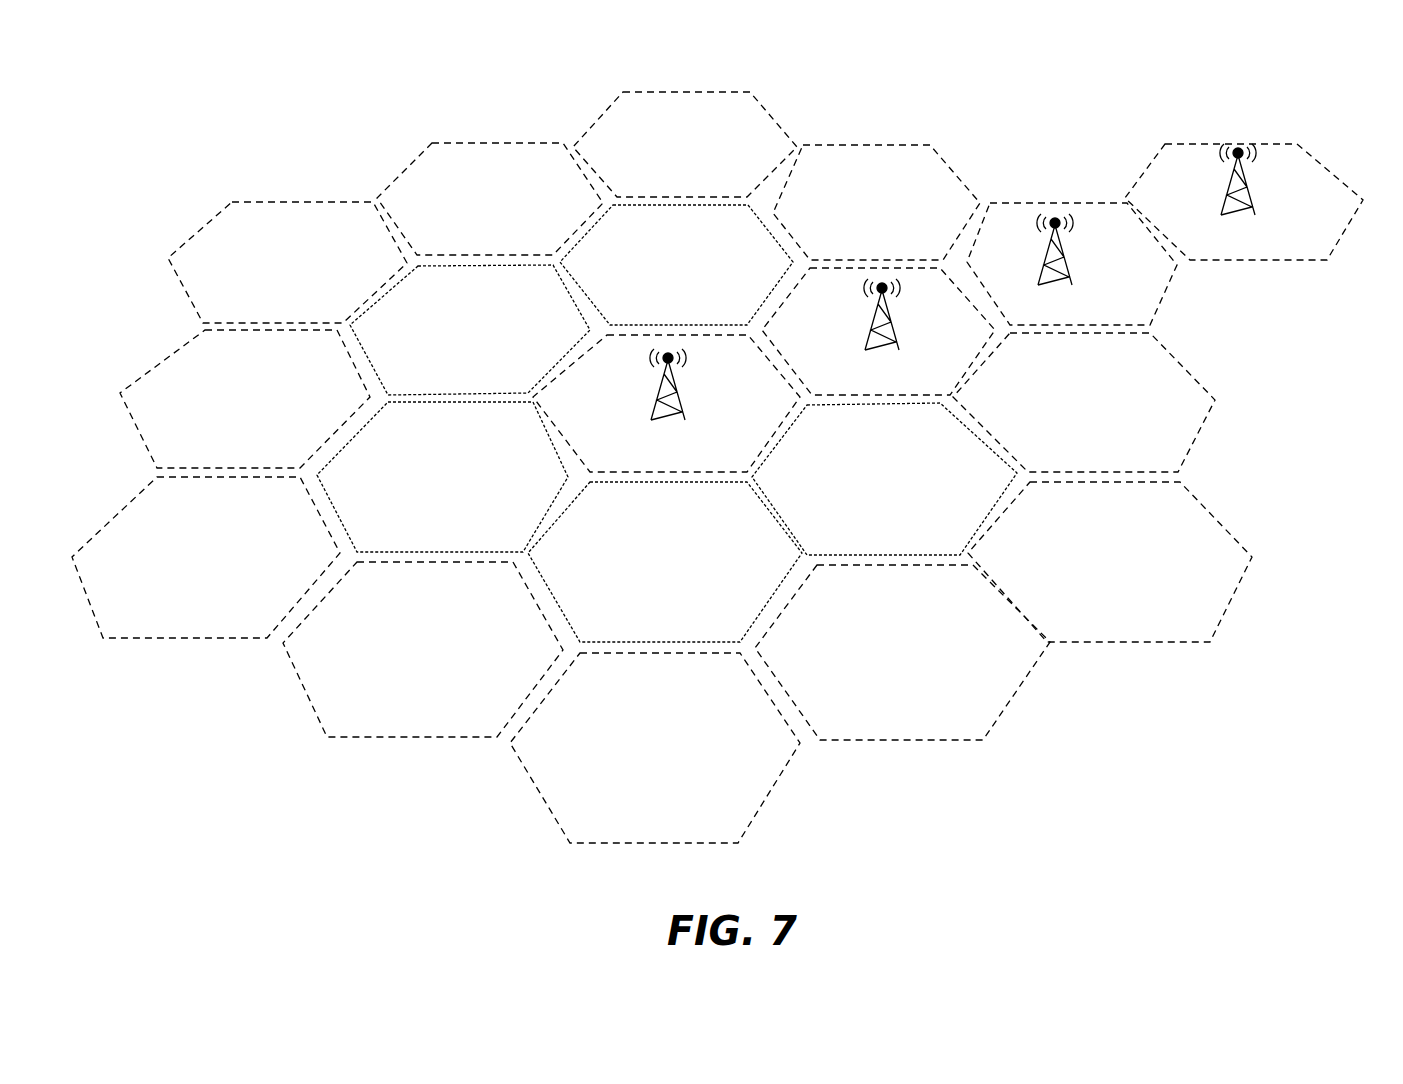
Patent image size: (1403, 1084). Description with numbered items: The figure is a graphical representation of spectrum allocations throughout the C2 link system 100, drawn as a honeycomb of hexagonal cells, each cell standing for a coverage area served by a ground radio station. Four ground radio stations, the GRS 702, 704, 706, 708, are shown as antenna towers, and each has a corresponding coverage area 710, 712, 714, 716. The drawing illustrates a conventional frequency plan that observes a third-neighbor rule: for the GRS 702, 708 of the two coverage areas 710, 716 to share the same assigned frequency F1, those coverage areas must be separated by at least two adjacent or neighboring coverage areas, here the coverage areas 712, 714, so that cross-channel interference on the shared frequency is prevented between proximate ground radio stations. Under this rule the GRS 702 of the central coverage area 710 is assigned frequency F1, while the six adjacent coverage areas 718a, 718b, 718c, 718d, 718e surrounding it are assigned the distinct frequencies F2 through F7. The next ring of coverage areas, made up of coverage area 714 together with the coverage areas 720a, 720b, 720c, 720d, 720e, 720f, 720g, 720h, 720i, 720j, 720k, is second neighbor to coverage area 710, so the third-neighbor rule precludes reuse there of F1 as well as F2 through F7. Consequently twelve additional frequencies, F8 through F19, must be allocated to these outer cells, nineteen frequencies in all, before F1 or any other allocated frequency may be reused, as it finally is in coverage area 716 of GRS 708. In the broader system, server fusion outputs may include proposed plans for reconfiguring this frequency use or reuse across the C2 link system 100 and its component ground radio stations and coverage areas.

The C2 link system 100 is at (118, 124).
The ground radio station 702 is at (666, 354).
The ground radio station 704 is at (884, 284).
The ground radio station 706 is at (1056, 218).
The ground radio station 708 is at (1247, 187).
The coverage area 710 is at (735, 453).
The coverage area 712 is at (947, 378).
The coverage area 714 is at (1137, 315).
The coverage area 716 is at (1313, 248).
The adjacent coverage area 718a is at (947, 538).
The adjacent coverage area 718b is at (725, 615).
The adjacent coverage area 718c is at (515, 533).
The adjacent coverage area 718d is at (525, 383).
The adjacent coverage area 718e is at (728, 313).
The next-ring coverage area 720a is at (887, 250).
The next-ring coverage area 720b is at (1163, 450).
The next-ring coverage area 720c is at (1190, 628).
The next-ring coverage area 720d is at (965, 716).
The next-ring coverage area 720e is at (727, 825).
The next-ring coverage area 720f is at (482, 720).
The next-ring coverage area 720g is at (263, 621).
The next-ring coverage area 720h is at (293, 451).
The next-ring coverage area 720i is at (337, 310).
The next-ring coverage area 720j is at (513, 246).
The next-ring coverage area 720k is at (735, 190).